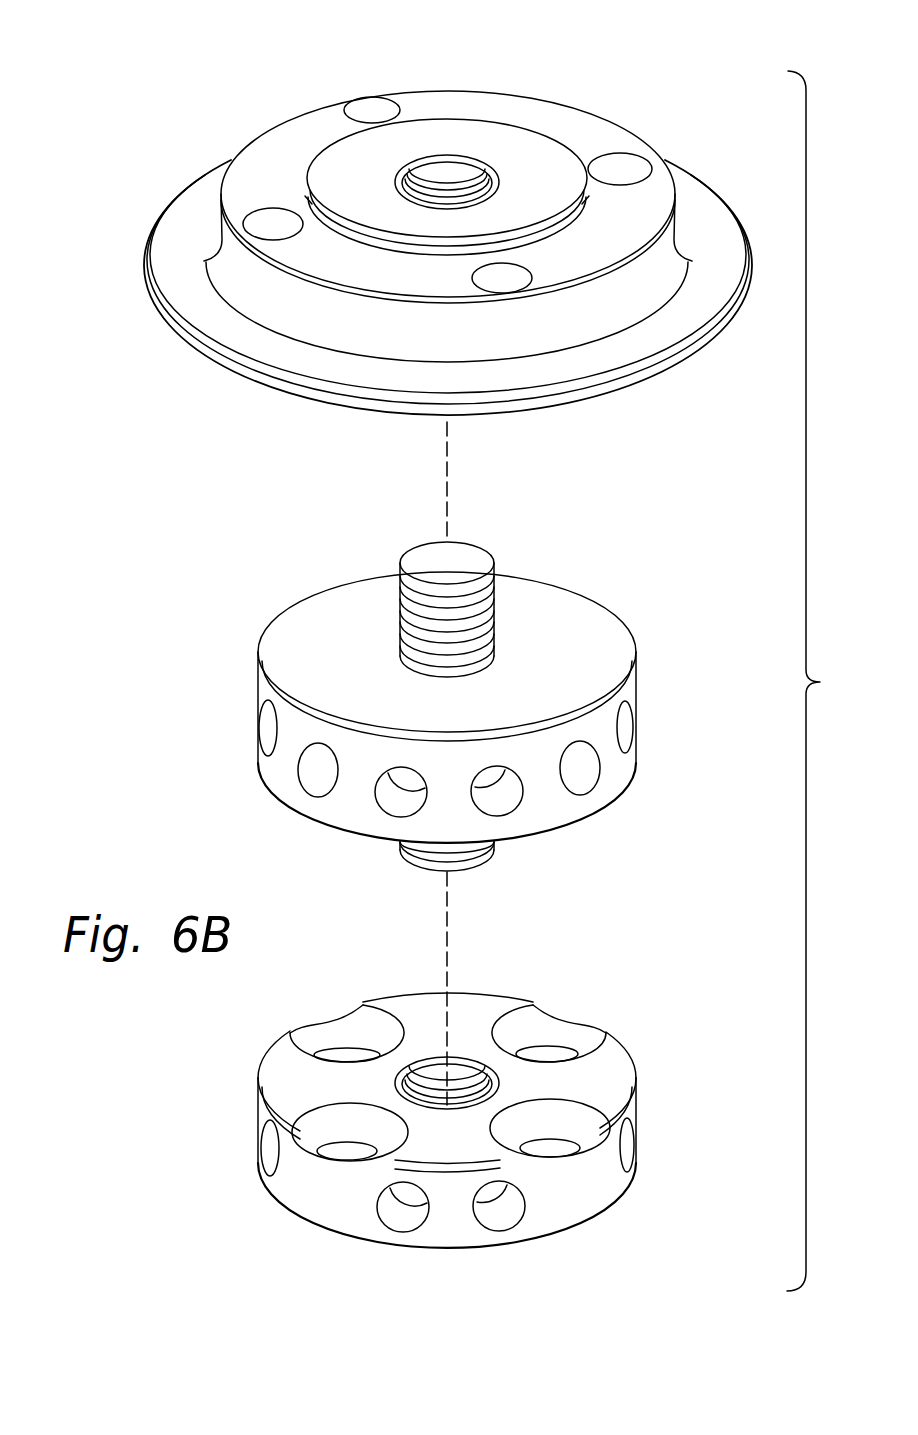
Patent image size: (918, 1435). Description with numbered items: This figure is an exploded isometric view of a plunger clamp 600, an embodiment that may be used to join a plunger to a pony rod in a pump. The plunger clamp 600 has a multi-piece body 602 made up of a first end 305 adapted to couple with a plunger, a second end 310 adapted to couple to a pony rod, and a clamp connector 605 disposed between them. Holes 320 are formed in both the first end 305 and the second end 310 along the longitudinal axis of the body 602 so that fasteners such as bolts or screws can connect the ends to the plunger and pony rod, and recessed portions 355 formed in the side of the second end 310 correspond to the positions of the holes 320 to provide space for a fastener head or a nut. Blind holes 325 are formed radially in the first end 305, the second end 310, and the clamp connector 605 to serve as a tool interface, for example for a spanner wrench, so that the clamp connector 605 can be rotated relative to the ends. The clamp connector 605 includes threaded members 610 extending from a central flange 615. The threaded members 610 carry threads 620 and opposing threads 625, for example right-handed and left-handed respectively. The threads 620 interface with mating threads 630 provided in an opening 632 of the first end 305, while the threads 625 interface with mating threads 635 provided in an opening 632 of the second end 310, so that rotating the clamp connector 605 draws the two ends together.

The plunger clamp 600 is at (155, 73).
The multi-piece body 602 is at (827, 681).
The first end 305 is at (172, 198).
The second end 310 is at (315, 1222).
The holes 320 is at (384, 104).
The blind holes 325 is at (312, 775).
The recessed portions 355 is at (567, 1120).
The clamp connector 605 is at (268, 592).
The threaded members 610 is at (428, 553).
The central flange 615 is at (636, 680).
The threads 620 is at (495, 627).
The threads 625 is at (531, 864).
The mating threads 630 is at (455, 180).
The opening 632 is at (423, 1088).
The mating threads 635 is at (463, 1095).